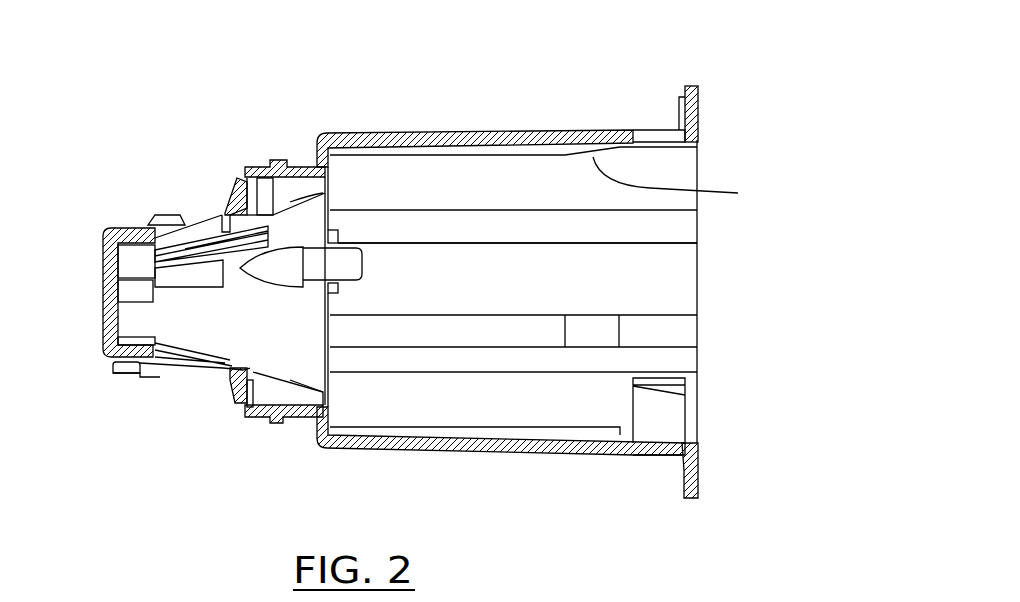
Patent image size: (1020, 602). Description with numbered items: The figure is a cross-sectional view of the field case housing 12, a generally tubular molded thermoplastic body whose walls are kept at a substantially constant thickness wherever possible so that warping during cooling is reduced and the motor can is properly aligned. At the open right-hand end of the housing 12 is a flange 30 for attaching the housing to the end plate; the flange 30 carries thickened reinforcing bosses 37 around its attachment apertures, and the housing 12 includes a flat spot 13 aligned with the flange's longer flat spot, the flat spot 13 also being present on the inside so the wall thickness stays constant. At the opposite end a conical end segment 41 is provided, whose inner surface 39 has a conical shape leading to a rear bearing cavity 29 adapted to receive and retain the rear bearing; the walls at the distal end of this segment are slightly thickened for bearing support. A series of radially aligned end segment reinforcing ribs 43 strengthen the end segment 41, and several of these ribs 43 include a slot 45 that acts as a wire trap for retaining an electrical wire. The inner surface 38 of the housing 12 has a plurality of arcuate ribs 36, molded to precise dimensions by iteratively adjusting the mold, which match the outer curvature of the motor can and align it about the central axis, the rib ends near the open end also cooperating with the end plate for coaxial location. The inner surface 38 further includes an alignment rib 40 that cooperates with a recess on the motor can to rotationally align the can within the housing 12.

The field case housing 12 is at (473, 90).
The flat spot 13 is at (652, 243).
The rear bearing cavity 29 is at (132, 267).
The flange 30 is at (700, 112).
The arcuate ribs 36 is at (693, 328).
The reinforcing bosses 37 is at (680, 117).
The inner surface 38 is at (464, 202).
The inner surface of the end segment 39 is at (266, 344).
The alignment rib 40 is at (545, 413).
The conical end segment 41 is at (300, 145).
The end segment reinforcing ribs 43 is at (158, 376).
The slot 45 is at (112, 367).